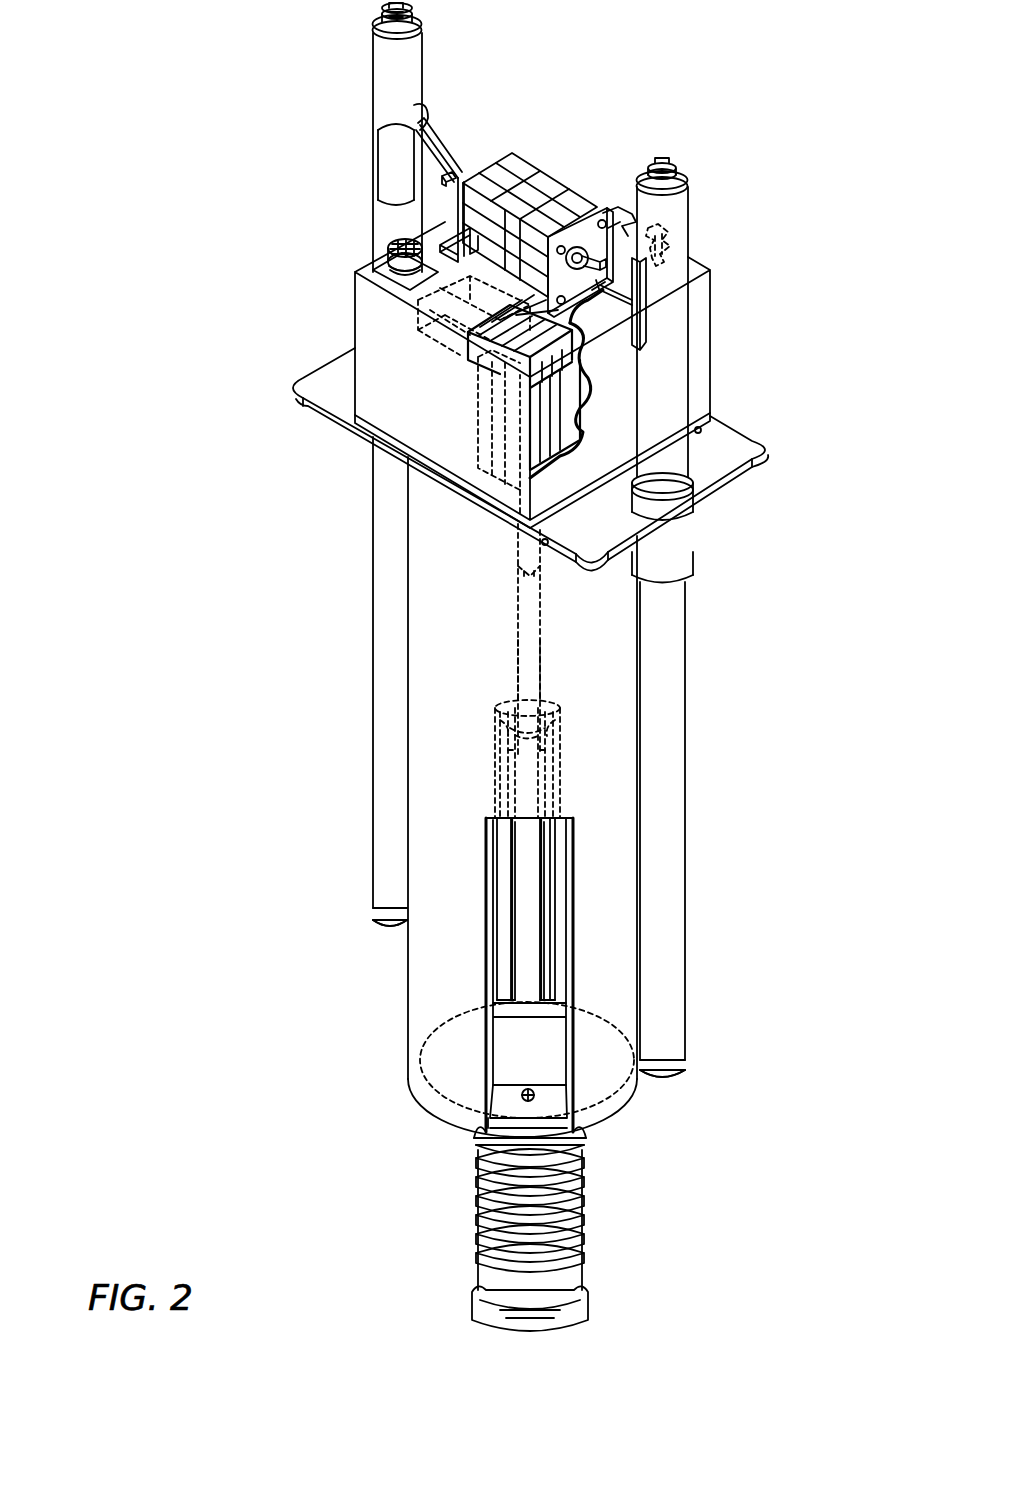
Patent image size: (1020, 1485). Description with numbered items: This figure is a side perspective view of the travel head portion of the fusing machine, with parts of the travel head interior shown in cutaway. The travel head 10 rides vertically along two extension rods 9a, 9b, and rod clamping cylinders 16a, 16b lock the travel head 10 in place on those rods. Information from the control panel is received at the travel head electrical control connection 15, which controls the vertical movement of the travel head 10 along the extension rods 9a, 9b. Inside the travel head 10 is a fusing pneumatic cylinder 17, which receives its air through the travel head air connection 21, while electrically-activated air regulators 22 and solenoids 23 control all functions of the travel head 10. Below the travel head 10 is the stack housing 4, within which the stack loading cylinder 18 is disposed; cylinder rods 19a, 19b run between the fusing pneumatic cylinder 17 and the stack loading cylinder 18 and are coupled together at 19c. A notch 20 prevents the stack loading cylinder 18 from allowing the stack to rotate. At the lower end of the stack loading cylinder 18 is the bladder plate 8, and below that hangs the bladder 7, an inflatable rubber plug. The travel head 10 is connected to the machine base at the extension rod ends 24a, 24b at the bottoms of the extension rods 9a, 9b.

The stack housing 4 is at (408, 1020).
The bladder 7 is at (580, 1200).
The bladder plate 8 is at (604, 1112).
The extension rod 9a is at (373, 548).
The extension rod 9b is at (688, 676).
The travel head 10 is at (758, 447).
The travel head electrical control connection 15 is at (378, 252).
The rod clamping cylinder 16a is at (522, 157).
The rod clamping cylinder 16b is at (572, 190).
The fusing pneumatic cylinder 17 is at (478, 378).
The stack loading cylinder 18 is at (560, 798).
The cylinder rod 19a is at (516, 550).
The cylinder rod 19b is at (518, 646).
The coupling 19c is at (528, 578).
The notch 20 is at (575, 920).
The travel head air connection 21 is at (668, 226).
The electrically-activated air regulators 22 is at (412, 323).
The solenoids 23 is at (565, 360).
The extension rod end 24a is at (390, 926).
The extension rod end 24b is at (668, 1082).